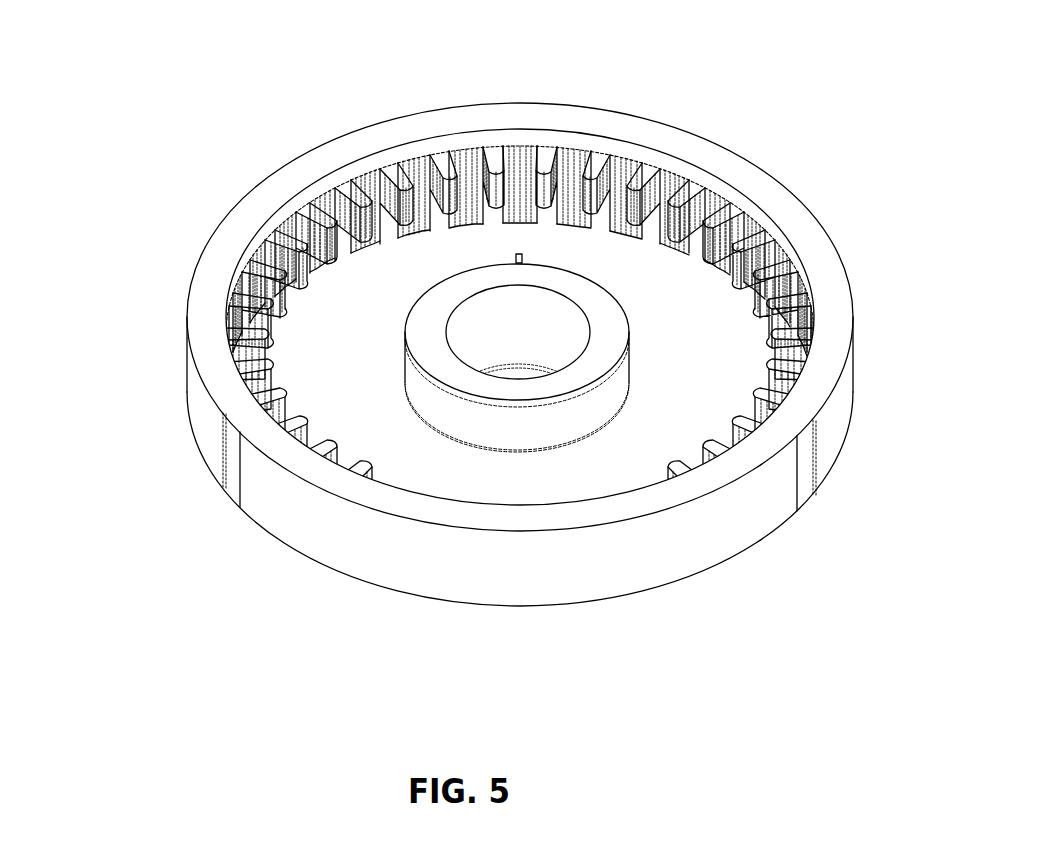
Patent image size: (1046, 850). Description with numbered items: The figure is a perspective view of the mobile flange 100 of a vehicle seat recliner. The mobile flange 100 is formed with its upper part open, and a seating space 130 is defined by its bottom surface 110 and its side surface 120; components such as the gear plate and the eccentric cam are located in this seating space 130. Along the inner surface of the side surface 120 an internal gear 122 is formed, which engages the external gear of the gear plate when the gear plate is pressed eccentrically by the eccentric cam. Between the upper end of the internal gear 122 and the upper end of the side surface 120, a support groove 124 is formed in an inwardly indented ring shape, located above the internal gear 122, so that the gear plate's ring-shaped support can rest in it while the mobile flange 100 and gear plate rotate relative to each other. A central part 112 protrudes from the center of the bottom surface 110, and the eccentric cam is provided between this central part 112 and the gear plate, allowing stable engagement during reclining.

The mobile flange 100 is at (308, 530).
The bottom surface 110 is at (530, 473).
The central part 112 is at (603, 317).
The side surface 120 is at (203, 415).
The internal gear 122 is at (373, 207).
The support groove 124 is at (390, 167).
The seating space 130 is at (708, 413).